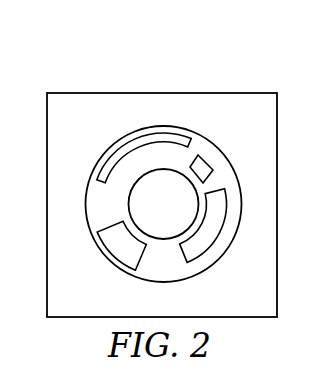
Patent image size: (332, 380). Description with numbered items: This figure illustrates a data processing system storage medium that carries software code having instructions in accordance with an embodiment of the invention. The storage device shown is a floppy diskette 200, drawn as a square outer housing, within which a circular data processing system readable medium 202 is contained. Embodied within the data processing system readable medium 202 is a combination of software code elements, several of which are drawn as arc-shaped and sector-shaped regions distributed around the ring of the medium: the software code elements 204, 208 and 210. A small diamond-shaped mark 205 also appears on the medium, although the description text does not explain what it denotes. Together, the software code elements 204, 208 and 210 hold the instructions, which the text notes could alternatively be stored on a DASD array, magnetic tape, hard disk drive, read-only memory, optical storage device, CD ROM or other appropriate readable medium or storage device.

The floppy diskette 200 is at (164, 86).
The data processing system readable medium 202 is at (86, 194).
The software code element 204 is at (212, 227).
The diamond mark 205 is at (205, 170).
The software code element 208 is at (138, 146).
The software code element 210 is at (115, 250).